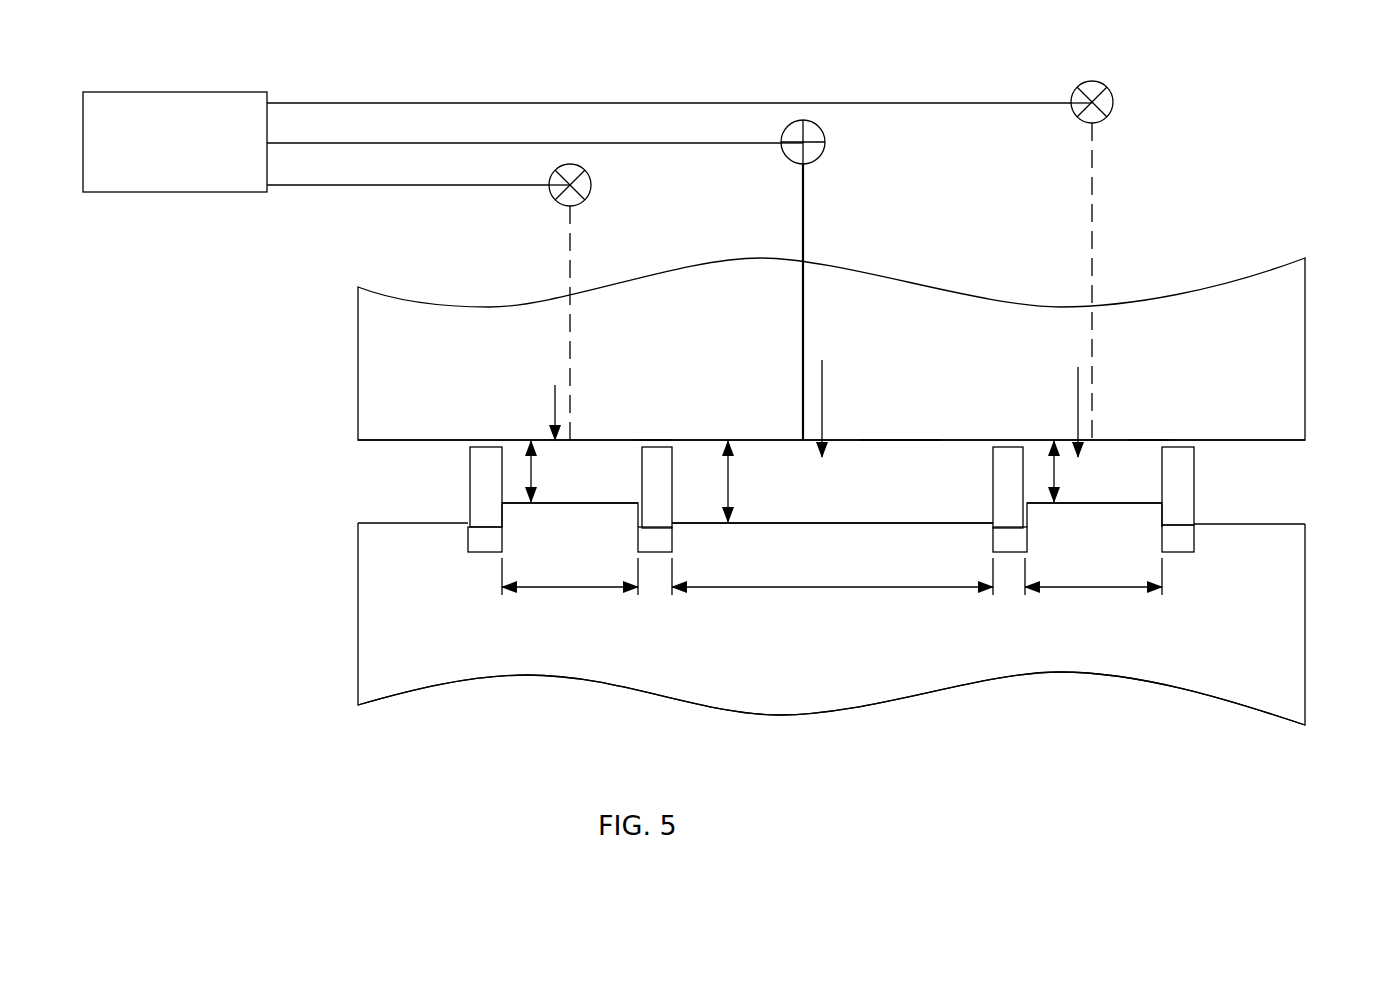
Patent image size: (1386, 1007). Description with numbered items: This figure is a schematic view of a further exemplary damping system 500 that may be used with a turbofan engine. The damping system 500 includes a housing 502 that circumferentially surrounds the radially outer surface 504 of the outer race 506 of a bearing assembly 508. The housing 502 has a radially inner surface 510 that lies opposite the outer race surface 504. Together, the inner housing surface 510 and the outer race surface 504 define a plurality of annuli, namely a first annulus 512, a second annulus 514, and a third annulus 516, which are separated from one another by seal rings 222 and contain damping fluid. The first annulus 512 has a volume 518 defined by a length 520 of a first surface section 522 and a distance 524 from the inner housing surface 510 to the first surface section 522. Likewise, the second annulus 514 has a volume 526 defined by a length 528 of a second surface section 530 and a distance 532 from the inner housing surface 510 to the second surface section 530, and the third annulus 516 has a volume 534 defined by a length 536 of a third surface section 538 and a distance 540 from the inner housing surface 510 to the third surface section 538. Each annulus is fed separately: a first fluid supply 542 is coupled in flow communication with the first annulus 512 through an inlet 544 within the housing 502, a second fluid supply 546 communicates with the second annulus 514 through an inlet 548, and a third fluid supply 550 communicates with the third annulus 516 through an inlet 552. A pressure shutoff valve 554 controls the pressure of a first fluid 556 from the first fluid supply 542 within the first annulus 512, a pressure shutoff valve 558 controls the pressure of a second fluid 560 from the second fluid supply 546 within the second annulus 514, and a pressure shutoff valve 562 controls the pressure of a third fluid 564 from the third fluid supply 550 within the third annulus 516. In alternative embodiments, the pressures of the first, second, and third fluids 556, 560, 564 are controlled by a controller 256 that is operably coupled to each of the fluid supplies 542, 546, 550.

The controller 256 is at (203, 152).
The damping system 500 is at (1238, 158).
The housing 502 is at (1306, 290).
The radially outer surface 504 is at (1290, 524).
The outer race 506 is at (1306, 650).
The bearing assembly 508 is at (1072, 680).
The radially inner surface 510 is at (1290, 441).
The first annulus 512 is at (634, 446).
The second annulus 514 is at (901, 446).
The third annulus 516 is at (1152, 446).
The volume 518 is at (614, 492).
The length 520 is at (546, 591).
The first surface section 522 is at (546, 505).
The distance 524 is at (531, 475).
The volume 526 is at (935, 485).
The length 528 is at (828, 590).
The second surface section 530 is at (814, 523).
The distance 532 is at (728, 486).
The volume 534 is at (1155, 485).
The length 536 is at (1085, 590).
The third surface section 538 is at (1065, 504).
The distance 540 is at (1054, 475).
The first fluid supply 542 is at (594, 176).
The inlet 544 is at (569, 356).
The second fluid supply 546 is at (827, 125).
The inlet 548 is at (806, 245).
The third fluid supply 550 is at (1103, 80).
The inlet 552 is at (1096, 273).
The pressure shutoff valve 554 is at (568, 206).
The first fluid 556 is at (555, 399).
The pressure shutoff valve 558 is at (818, 158).
The second fluid 560 is at (822, 406).
The pressure shutoff valve 562 is at (1113, 101).
The third fluid 564 is at (1078, 401).
The seal rings 222 is at (470, 486).